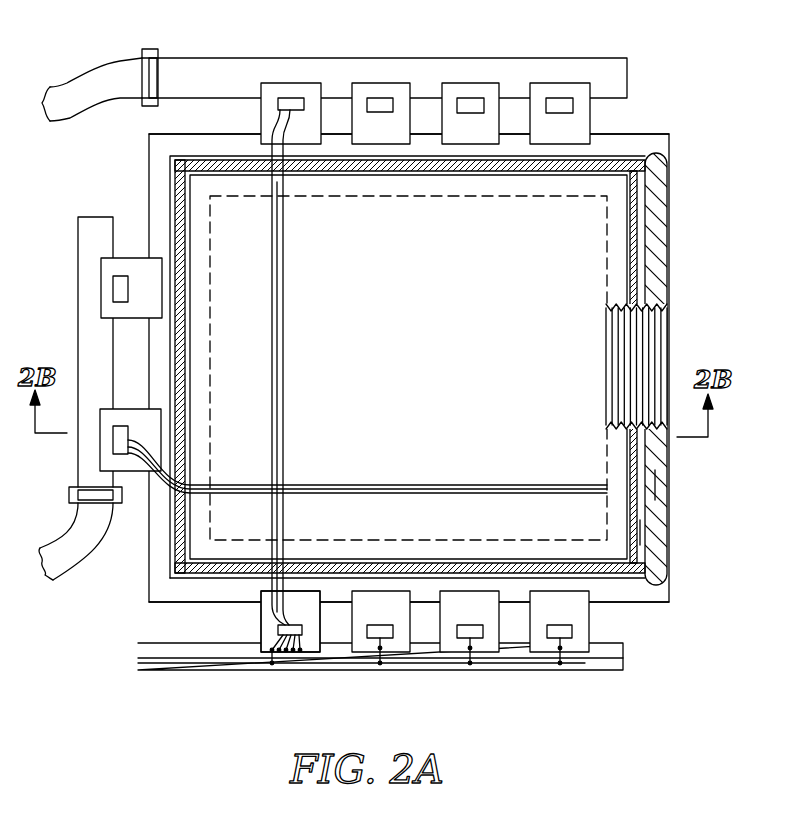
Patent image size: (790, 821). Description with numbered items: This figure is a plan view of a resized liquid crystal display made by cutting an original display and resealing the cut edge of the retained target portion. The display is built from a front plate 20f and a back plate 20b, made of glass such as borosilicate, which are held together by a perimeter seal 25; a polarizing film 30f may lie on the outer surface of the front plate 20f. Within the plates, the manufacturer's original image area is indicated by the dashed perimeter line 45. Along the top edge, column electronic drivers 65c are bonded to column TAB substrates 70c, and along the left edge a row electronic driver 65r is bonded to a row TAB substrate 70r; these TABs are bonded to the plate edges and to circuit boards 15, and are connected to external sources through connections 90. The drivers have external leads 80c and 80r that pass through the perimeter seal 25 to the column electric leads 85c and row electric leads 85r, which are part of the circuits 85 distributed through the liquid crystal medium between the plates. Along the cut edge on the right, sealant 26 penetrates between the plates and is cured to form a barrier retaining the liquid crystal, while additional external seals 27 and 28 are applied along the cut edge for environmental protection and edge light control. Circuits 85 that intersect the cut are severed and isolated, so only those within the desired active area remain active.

The circuit boards 15 is at (198, 75).
The front plate 20f is at (170, 155).
The back plate 20b is at (160, 586).
The polarizing film 30f is at (190, 188).
The perimeter seal 25 is at (603, 163).
The row and column electric leads 85 is at (628, 238).
The dashed perimeter line 45 is at (607, 262).
The seal 27 is at (655, 480).
The sealant 26 is at (644, 532).
The seal 28 is at (655, 324).
The column TAB substrate 70c is at (272, 88).
The column electronic driver 65c is at (290, 100).
The column electric leads 85c is at (285, 368).
The column external leads 80c is at (262, 610).
The connections 90 is at (306, 655).
The row TAB substrate 70r is at (108, 310).
The row electronic driver 65r is at (120, 289).
The row external leads 80r is at (145, 458).
The row electric leads 85r is at (410, 486).